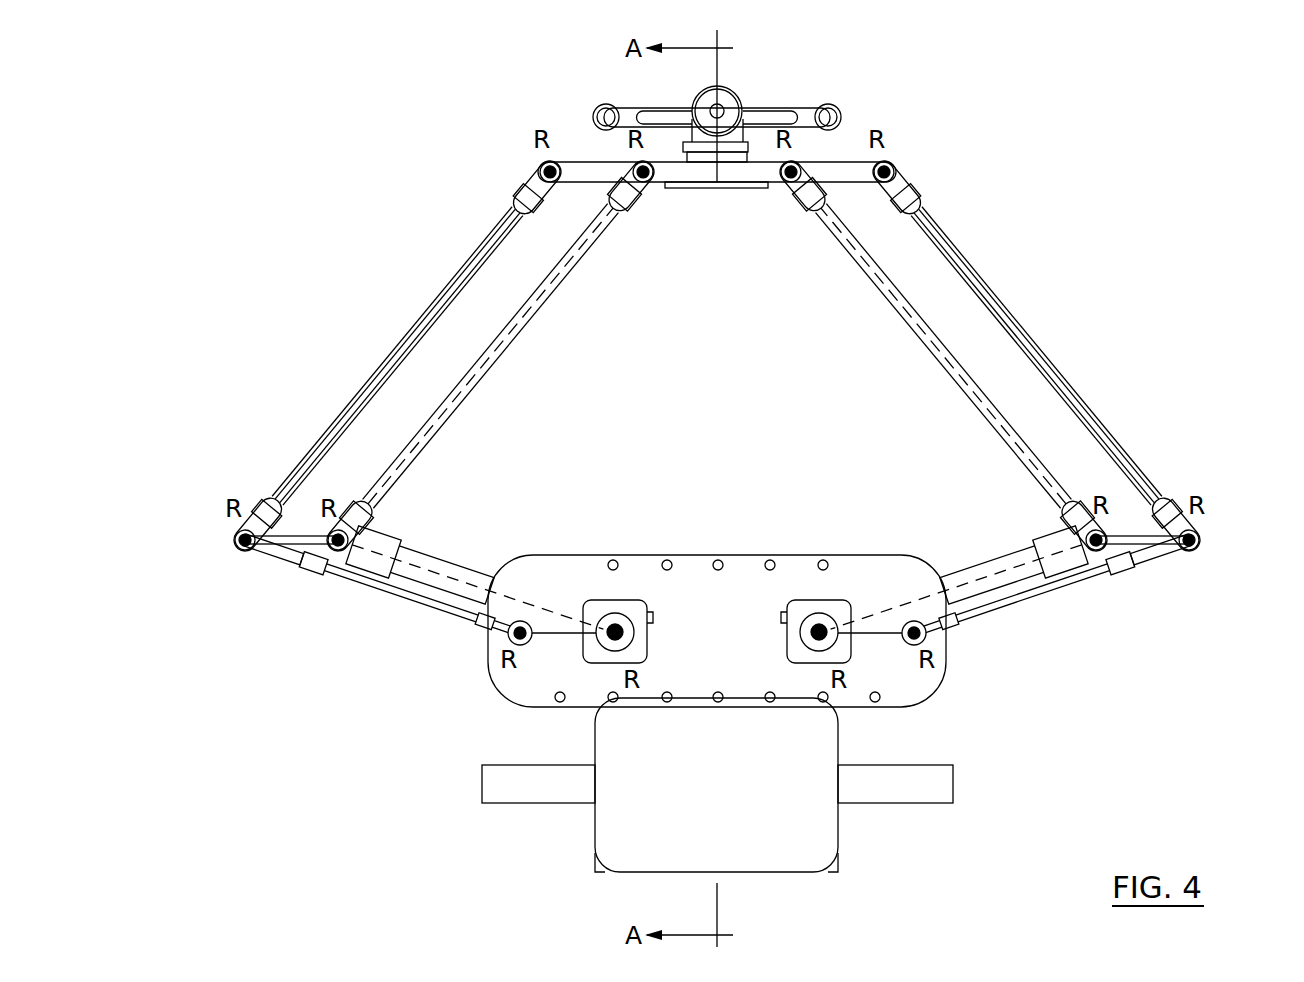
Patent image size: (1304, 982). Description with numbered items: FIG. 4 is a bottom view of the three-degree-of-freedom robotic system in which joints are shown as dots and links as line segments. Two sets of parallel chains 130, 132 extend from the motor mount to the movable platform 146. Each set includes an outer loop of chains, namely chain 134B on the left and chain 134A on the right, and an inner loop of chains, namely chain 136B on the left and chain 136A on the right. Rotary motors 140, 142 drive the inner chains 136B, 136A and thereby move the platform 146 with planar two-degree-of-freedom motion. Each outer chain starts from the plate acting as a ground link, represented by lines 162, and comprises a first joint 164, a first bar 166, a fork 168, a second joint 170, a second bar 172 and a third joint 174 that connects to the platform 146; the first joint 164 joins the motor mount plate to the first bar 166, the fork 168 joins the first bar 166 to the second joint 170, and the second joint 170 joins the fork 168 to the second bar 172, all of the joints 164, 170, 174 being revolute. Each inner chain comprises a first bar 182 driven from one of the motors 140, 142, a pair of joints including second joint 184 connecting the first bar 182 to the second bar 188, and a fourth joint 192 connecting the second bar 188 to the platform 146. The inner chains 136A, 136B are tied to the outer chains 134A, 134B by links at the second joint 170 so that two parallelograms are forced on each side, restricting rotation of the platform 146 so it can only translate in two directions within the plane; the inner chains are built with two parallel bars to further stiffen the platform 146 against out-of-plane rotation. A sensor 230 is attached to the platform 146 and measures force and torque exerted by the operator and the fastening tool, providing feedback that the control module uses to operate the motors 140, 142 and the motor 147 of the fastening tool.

The set of parallel chains 130 is at (346, 299).
The set of parallel chains 132 is at (1068, 275).
The outer chain 134A is at (1077, 382).
The outer chain 134B is at (356, 387).
The inner chain 136A is at (956, 399).
The inner chain 136B is at (482, 400).
The rotary motor 140 is at (644, 597).
The rotary motor 142 is at (788, 597).
The movable platform 146 is at (846, 160).
The motor of the fastening tool 147 is at (744, 92).
The ground link lines 162 is at (562, 640).
The first joint 164 is at (506, 640).
The first bar 166 is at (352, 582).
The fork 168 is at (292, 568).
The second joint 170 is at (272, 510).
The second bar 172 is at (448, 252).
The third joint 174 is at (530, 190).
The first bar 182 is at (478, 578).
The second joint 184 is at (387, 516).
The second bar 188 is at (548, 330).
The fourth joint 192 is at (620, 212).
The sensor 230 is at (716, 148).